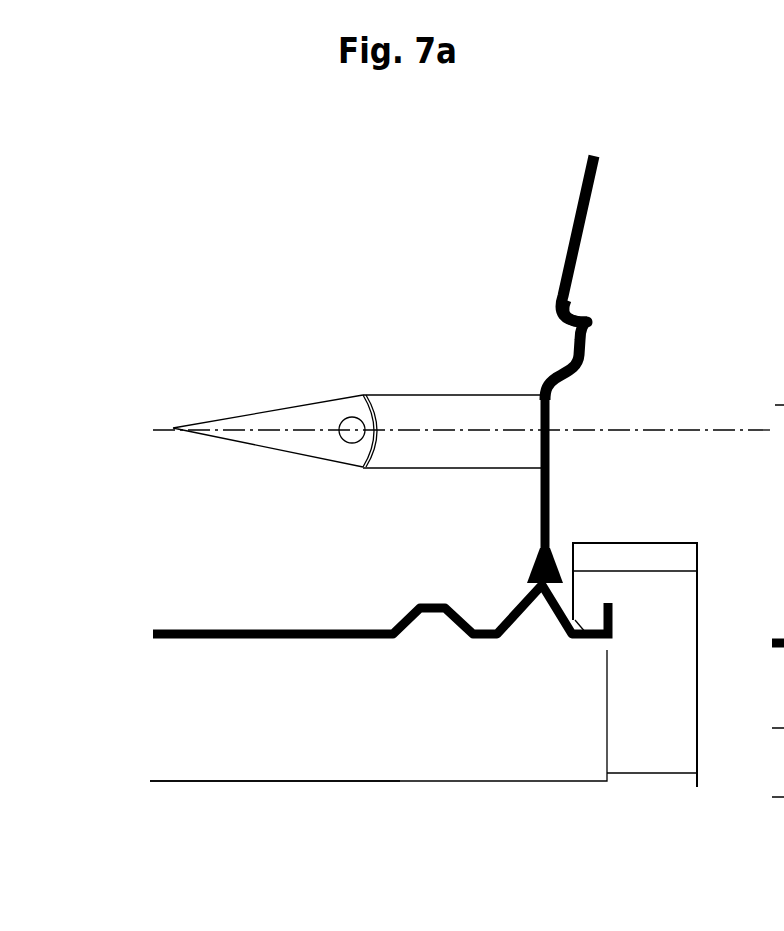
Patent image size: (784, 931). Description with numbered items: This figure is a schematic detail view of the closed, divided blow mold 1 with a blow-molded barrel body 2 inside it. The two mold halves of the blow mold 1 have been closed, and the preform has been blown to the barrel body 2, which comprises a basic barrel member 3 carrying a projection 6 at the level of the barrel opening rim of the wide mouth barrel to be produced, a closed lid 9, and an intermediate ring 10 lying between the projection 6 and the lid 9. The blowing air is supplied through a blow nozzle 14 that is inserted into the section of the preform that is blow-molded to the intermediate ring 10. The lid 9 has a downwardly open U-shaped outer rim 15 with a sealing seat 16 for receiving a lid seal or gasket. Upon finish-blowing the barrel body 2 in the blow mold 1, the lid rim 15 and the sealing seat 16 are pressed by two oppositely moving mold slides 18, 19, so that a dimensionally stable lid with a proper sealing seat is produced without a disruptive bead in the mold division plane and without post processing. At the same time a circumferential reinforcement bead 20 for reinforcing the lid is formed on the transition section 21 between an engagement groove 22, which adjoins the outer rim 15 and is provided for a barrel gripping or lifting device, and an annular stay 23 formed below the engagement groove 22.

The blow mold 1 is at (370, 800).
The barrel body 2 is at (412, 265).
The basic barrel member 3 is at (597, 187).
The projection 6 is at (595, 322).
The lid 9 is at (202, 637).
The intermediate ring 10 is at (540, 482).
The blow nozzle 14 is at (303, 417).
The outer rim 15 is at (586, 633).
The sealing seat 16 is at (586, 633).
The mold slide 18 is at (289, 717).
The mold slide 19 is at (665, 643).
The reinforcement bead 20 is at (540, 563).
The transition section 21 is at (547, 573).
The engagement groove 22 is at (540, 613).
The annular stay 23 is at (540, 527).